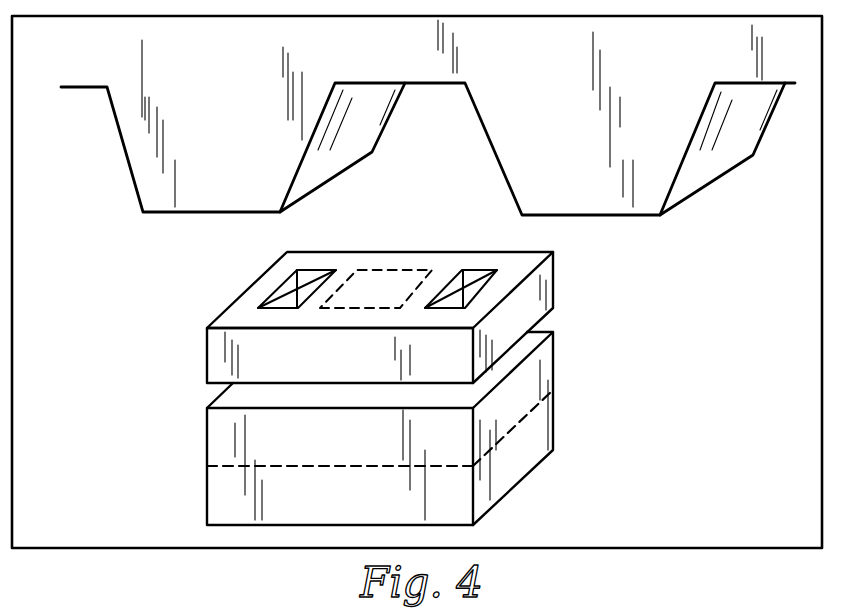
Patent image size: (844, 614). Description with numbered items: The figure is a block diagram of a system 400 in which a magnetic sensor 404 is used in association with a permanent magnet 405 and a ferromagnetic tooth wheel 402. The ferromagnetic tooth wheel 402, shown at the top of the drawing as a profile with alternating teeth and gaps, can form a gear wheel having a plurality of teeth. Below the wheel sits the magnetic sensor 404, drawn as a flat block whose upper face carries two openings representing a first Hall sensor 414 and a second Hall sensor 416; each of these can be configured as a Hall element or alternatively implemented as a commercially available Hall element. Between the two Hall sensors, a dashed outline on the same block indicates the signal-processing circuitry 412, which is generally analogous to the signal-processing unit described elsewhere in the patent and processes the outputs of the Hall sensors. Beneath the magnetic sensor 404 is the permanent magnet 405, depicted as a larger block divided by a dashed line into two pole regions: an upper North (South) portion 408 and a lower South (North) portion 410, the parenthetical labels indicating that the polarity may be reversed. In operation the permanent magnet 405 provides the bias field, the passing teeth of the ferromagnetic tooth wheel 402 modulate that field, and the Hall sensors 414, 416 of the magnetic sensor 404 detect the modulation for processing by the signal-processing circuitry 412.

The system 400 is at (743, 500).
The ferromagnetic tooth wheel 402 is at (238, 137).
The magnetic sensor 404 is at (222, 315).
The permanent magnet 405 is at (218, 398).
The North (South) portion 408 is at (225, 440).
The South (North) portion 410 is at (225, 495).
The signal-processing circuitry 412 is at (405, 268).
The Hall sensor 414 is at (272, 292).
The Hall sensor 416 is at (490, 270).